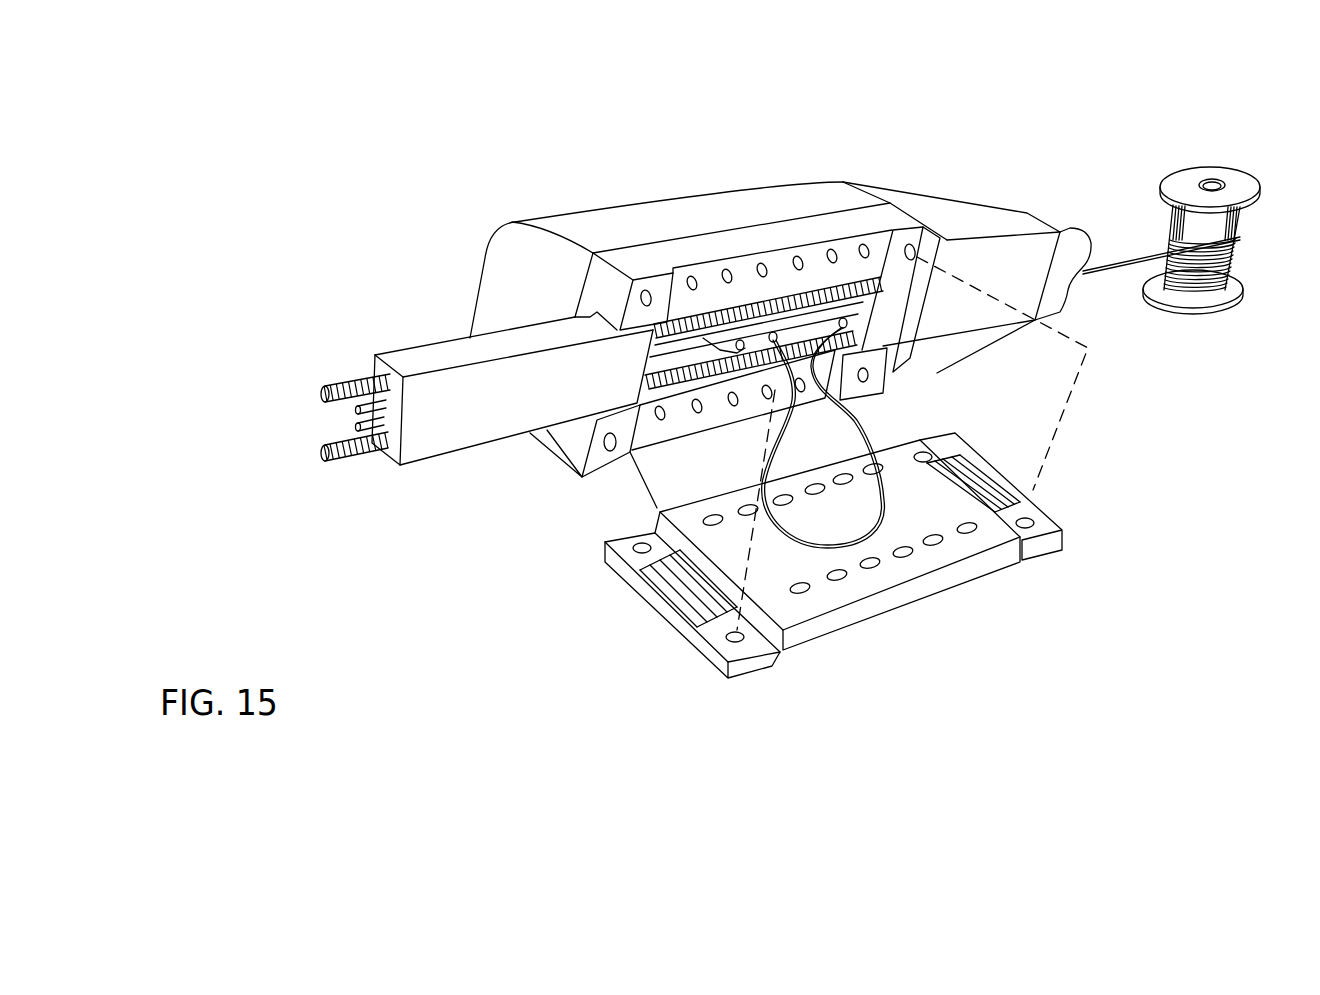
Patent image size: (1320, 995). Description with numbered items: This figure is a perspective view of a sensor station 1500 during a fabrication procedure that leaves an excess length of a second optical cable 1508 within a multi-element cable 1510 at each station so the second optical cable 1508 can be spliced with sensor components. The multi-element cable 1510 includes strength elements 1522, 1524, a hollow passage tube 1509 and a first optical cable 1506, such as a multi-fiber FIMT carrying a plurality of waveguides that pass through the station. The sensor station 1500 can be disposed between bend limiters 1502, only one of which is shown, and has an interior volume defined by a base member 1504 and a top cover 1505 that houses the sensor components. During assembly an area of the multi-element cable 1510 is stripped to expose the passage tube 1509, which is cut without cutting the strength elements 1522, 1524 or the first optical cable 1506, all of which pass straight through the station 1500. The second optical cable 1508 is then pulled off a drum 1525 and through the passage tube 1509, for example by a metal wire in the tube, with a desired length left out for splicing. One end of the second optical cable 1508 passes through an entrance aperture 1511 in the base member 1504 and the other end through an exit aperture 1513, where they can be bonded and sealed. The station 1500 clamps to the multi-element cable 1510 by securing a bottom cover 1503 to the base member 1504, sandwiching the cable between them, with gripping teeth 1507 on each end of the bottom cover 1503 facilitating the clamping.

The sensor station 1500 is at (858, 117).
The bend limiter 1502 is at (963, 217).
The bottom cover 1503 is at (883, 605).
The base member 1504 is at (812, 230).
The top cover 1505 is at (640, 210).
The first optical cable 1506 is at (357, 413).
The gripping teeth 1507 is at (968, 477).
The second optical cable 1508 is at (931, 440).
The hollow passage tube 1509 is at (355, 428).
The multi-element cable 1510 is at (484, 445).
The entrance aperture 1511 is at (773, 333).
The exit aperture 1513 is at (720, 352).
The strength element 1522 is at (342, 390).
The strength element 1524 is at (350, 455).
The drum 1525 is at (1187, 177).